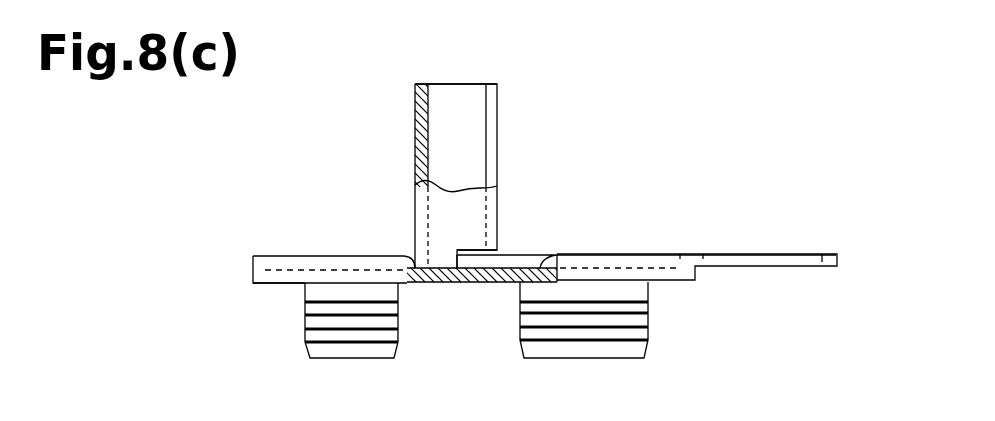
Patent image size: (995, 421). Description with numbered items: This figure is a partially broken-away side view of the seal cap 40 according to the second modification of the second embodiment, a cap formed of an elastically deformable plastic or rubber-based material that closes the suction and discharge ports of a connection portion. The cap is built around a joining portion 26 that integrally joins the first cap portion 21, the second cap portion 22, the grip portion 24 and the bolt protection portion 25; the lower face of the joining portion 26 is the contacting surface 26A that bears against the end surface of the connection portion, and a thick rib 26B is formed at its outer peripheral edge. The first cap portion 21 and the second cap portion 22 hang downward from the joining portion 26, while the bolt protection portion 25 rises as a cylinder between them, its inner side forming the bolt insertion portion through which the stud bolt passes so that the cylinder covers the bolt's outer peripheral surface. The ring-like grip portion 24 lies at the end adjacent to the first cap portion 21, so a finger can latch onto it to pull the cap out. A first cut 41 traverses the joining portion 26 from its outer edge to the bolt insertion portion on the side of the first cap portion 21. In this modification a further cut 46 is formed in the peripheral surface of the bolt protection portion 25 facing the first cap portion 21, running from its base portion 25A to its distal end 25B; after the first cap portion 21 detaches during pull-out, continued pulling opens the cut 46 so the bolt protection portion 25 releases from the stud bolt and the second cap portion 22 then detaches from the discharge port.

The seal cap 40 is at (662, 160).
The bolt protection portion 25 is at (415, 157).
The base portion 25A is at (499, 249).
The distal end 25B is at (498, 96).
The cut 46 is at (489, 147).
The joining portion 26 is at (540, 254).
The contacting surface 26A is at (280, 284).
The rib 26B is at (385, 253).
The grip portion 24 is at (782, 253).
The first cut 41 is at (500, 285).
The second cap portion 22 is at (398, 332).
The first cap portion 21 is at (648, 312).